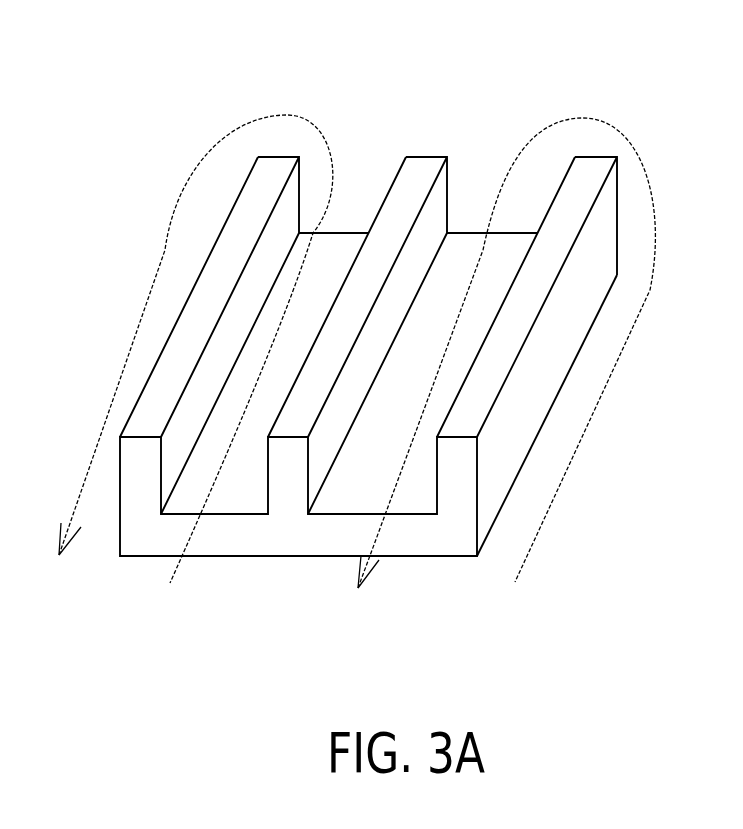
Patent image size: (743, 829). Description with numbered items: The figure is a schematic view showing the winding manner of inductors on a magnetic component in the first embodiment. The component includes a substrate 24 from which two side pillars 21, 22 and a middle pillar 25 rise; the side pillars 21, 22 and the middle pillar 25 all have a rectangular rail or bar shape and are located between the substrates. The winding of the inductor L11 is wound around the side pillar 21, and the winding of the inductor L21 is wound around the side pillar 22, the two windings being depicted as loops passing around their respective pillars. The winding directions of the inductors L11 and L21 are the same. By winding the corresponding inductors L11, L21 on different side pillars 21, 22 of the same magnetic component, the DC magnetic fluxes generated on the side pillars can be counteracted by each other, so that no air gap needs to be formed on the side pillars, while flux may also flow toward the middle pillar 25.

The side pillar 21 is at (180, 362).
The side pillar 22 is at (523, 295).
The substrate 24 is at (298, 537).
The middle pillar 25 is at (415, 182).
The inductor L11 is at (285, 117).
The inductor L21 is at (580, 118).